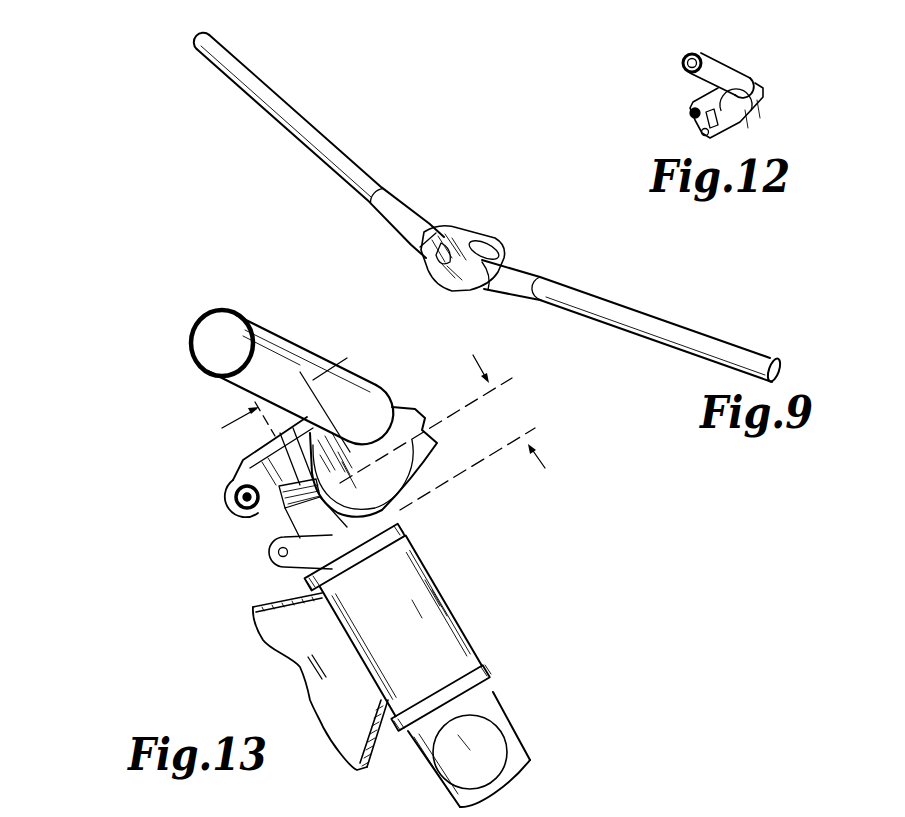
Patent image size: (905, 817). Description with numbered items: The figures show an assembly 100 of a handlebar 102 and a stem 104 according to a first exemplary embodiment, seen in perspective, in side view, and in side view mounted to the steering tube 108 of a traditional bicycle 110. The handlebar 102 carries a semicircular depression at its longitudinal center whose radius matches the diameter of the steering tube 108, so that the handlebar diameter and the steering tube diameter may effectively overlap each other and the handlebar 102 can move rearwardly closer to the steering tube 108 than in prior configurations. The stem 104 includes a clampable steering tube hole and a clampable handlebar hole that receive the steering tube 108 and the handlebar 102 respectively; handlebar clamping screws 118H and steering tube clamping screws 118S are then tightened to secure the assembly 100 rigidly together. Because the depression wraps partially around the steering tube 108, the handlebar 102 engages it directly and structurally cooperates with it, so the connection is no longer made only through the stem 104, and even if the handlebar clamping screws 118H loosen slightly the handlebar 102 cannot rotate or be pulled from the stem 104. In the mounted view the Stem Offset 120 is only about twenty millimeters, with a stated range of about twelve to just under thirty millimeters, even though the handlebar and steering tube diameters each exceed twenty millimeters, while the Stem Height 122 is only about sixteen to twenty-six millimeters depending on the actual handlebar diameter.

In FIG. 9, the assembly 100 is at (502, 223).
In FIG. 12, the assembly 100 is at (717, 88).
In FIG. 13, the assembly 100 is at (338, 472).
In FIG. 9, the handlebar 102 is at (683, 321).
In FIG. 12, the handlebar 102 is at (704, 52).
In FIG. 13, the handlebar 102 is at (237, 313).
In FIG. 9, the stem 104 is at (507, 257).
In FIG. 12, the stem 104 is at (765, 110).
In FIG. 13, the stem 104 is at (420, 477).
In FIG. 13, the steering tube 108 is at (277, 523).
In FIG. 13, the bicycle 110 is at (460, 637).
In FIG. 9, the handlebar clamping screws 118H is at (443, 243).
In FIG. 12, the steering tube clamping screws 118S is at (660, 123).
In FIG. 13, the steering tube clamping screws 118S is at (237, 501).
In FIG. 13, the Stem Offset 120 is at (226, 421).
In FIG. 13, the Stem Height 122 is at (466, 432).